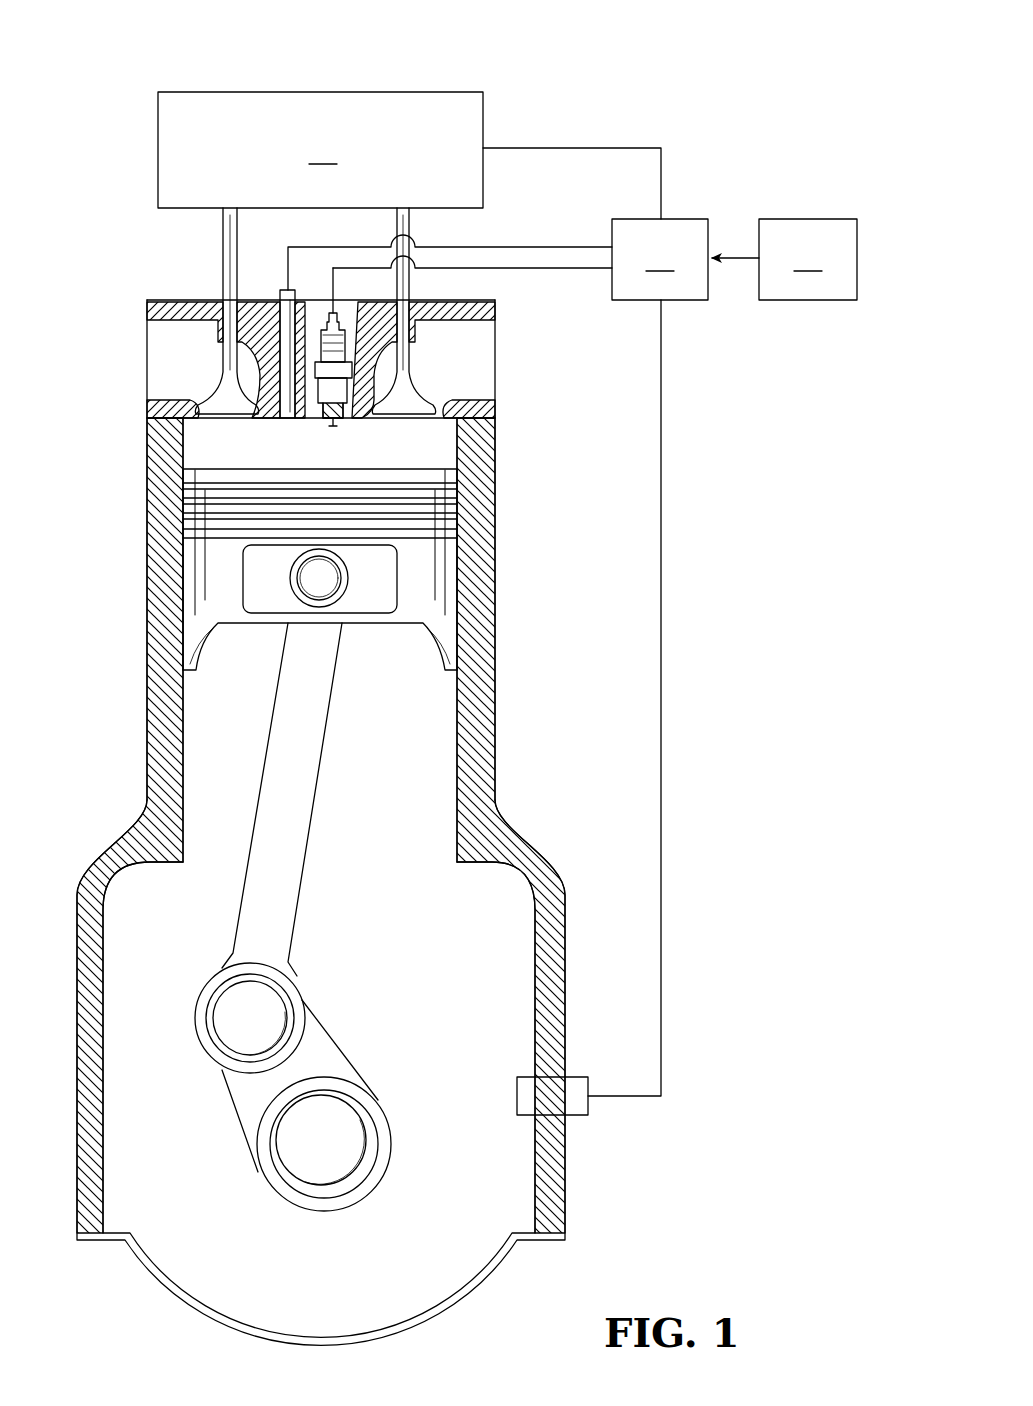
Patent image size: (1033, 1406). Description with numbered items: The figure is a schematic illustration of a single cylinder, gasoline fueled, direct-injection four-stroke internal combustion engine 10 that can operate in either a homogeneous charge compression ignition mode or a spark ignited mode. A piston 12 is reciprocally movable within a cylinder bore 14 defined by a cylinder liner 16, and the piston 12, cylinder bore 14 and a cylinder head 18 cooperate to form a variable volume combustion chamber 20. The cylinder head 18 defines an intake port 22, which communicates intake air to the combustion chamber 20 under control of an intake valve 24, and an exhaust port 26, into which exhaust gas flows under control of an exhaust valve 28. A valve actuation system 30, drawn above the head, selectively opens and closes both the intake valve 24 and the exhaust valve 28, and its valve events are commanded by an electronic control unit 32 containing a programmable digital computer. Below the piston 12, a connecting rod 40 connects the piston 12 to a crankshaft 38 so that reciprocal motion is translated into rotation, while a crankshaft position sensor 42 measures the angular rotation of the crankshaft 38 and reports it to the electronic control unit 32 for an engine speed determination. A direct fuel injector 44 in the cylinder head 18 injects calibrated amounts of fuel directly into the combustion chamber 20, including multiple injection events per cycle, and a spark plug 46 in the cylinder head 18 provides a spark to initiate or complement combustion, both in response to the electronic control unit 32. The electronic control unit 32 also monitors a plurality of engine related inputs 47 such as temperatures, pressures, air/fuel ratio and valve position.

The internal combustion engine 10 is at (133, 47).
The piston 12 is at (437, 568).
The cylinder bore 14 is at (450, 468).
The cylinder liner 16 is at (497, 503).
The cylinder head 18 is at (490, 297).
The combustion chamber 20 is at (220, 451).
The intake port 22 is at (193, 362).
The intake valve 24 is at (205, 428).
The exhaust port 26 is at (439, 366).
The exhaust valve 28 is at (448, 436).
The valve actuation system 30 is at (409, 155).
The electronic control unit 32 is at (648, 657).
The crankshaft 38 is at (352, 1065).
The connecting rod 40 is at (323, 758).
The crankshaft position sensor 42 is at (582, 1116).
The direct fuel injector 44 is at (288, 425).
The spark plug 46 is at (331, 425).
The engine related inputs 47 is at (784, 259).